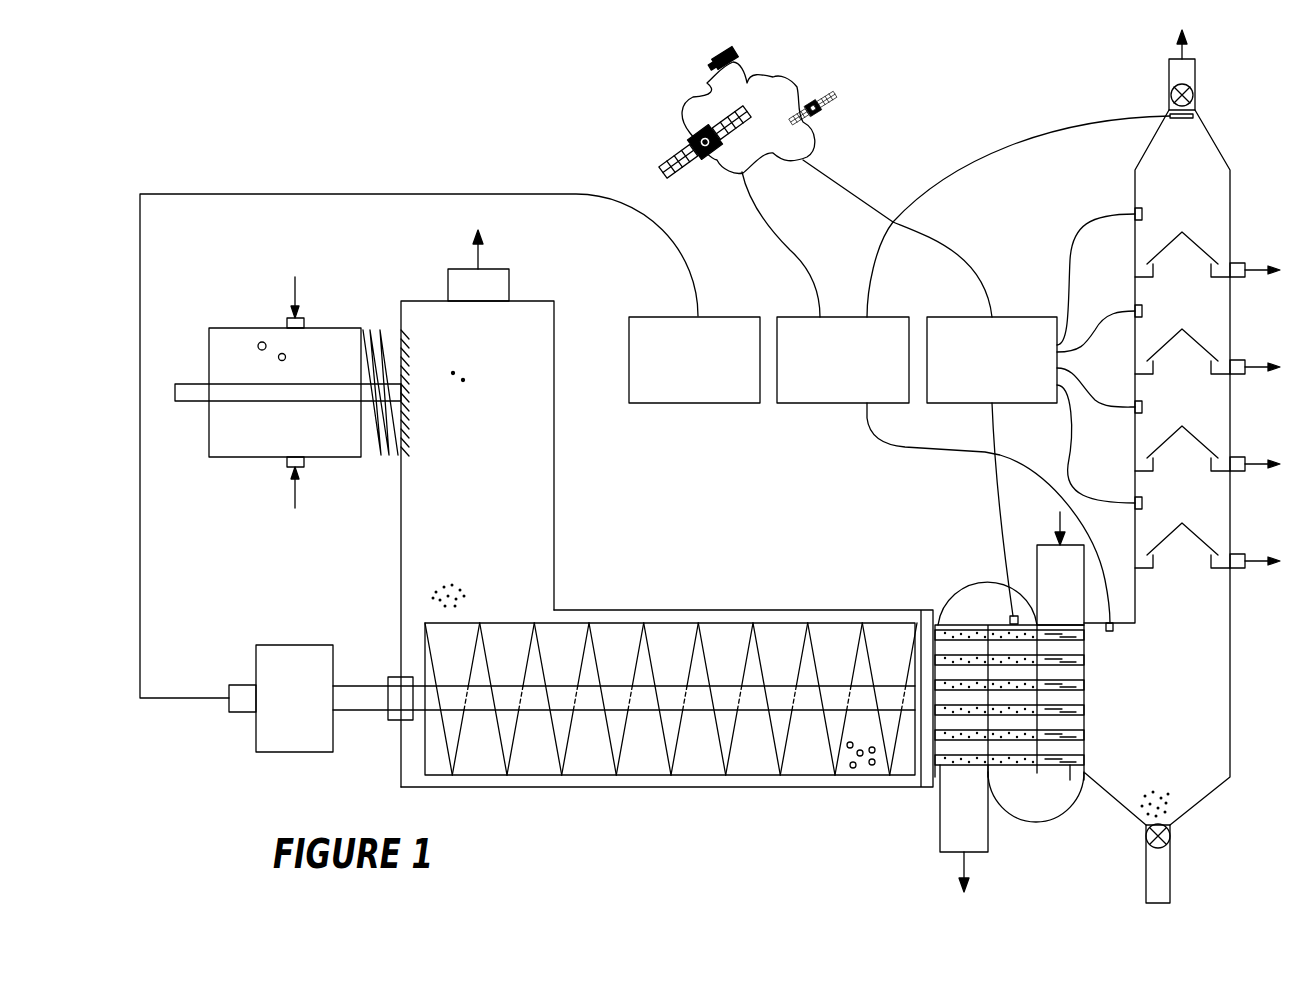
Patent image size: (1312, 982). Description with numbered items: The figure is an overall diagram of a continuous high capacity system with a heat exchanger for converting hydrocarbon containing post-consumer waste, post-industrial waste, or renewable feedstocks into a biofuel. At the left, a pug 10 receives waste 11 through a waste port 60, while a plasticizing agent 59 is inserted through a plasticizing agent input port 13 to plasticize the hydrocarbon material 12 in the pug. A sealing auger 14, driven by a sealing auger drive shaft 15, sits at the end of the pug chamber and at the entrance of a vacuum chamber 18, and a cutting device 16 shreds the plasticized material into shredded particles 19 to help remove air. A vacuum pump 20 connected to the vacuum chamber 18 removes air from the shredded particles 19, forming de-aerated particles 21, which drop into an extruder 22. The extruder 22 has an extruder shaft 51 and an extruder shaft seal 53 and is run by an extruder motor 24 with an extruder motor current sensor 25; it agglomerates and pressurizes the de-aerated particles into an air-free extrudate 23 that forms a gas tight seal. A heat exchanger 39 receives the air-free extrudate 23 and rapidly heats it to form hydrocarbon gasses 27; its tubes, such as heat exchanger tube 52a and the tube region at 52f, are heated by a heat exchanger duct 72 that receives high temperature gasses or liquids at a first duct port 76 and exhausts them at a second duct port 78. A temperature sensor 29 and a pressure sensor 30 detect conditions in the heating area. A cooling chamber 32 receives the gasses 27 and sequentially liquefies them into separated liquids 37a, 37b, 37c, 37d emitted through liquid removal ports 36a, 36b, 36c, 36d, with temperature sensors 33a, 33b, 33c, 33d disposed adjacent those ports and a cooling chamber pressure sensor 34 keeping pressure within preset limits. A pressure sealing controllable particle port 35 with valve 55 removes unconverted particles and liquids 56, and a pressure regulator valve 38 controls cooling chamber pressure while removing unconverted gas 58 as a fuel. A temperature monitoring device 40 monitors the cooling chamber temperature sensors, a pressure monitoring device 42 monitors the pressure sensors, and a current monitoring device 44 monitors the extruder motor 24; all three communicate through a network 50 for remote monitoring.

The pug 10 is at (238, 328).
The waste 11 is at (297, 292).
The hydrocarbon material 12 is at (262, 340).
The plasticizing agent input port 13 is at (305, 462).
The sealing auger 14 is at (372, 448).
The sealing auger drive shaft 15 is at (200, 384).
The cutting device 16 is at (400, 458).
The vacuum chamber 18 is at (554, 497).
The shredded particles 19 is at (463, 374).
The vacuum pump 20 is at (509, 286).
The de-aerated particles 21 is at (460, 590).
The extruder 22 is at (879, 594).
The air-free extrudate 23 is at (875, 765).
The extruder motor 24 is at (294, 752).
The extruder motor current sensor 25 is at (242, 712).
The hydrocarbon gasses 27 is at (1060, 765).
The temperature sensor 29 is at (1010, 618).
The pressure sensor 30 is at (1113, 631).
The cooling chamber 32 is at (1262, 108).
The temperature sensor 33a is at (1136, 497).
The temperature sensor 33b is at (1136, 401).
The temperature sensor 33c is at (1136, 305).
The temperature sensor 33d is at (1136, 208).
The cooling chamber pressure sensor 34 is at (1200, 112).
The pressure sealing controllable particle port 35 is at (1172, 873).
The liquid removal port 36a is at (1240, 569).
The liquid removal port 36b is at (1240, 472).
The liquid removal port 36c is at (1240, 375).
The liquid removal port 36d is at (1240, 278).
The separated liquid 37a is at (1258, 559).
The separated liquid 37b is at (1258, 462).
The separated liquid 37c is at (1258, 365).
The separated liquid 37d is at (1258, 268).
The pressure regulator valve 38 is at (1172, 80).
The heat exchanger 39 is at (950, 540).
The temperature monitoring device 40 is at (948, 317).
The pressure monitoring device 42 is at (798, 317).
The current monitoring device 44 is at (652, 317).
The network 50 is at (793, 76).
The extruder shaft 51 is at (362, 686).
The heat exchanger tube 52a is at (946, 600).
The outlet plenum 52f is at (1075, 782).
The extruder shaft seal 53 is at (396, 677).
The valve 55 is at (1152, 850).
The particles and liquids 56 is at (1172, 810).
The unconverted gas 58 is at (1200, 60).
The plasticizing agent 59 is at (297, 497).
The waste port 60 is at (305, 321).
The heat exchanger duct 72 is at (1048, 822).
The first duct port 76 is at (1058, 518).
The second duct port 78 is at (966, 870).